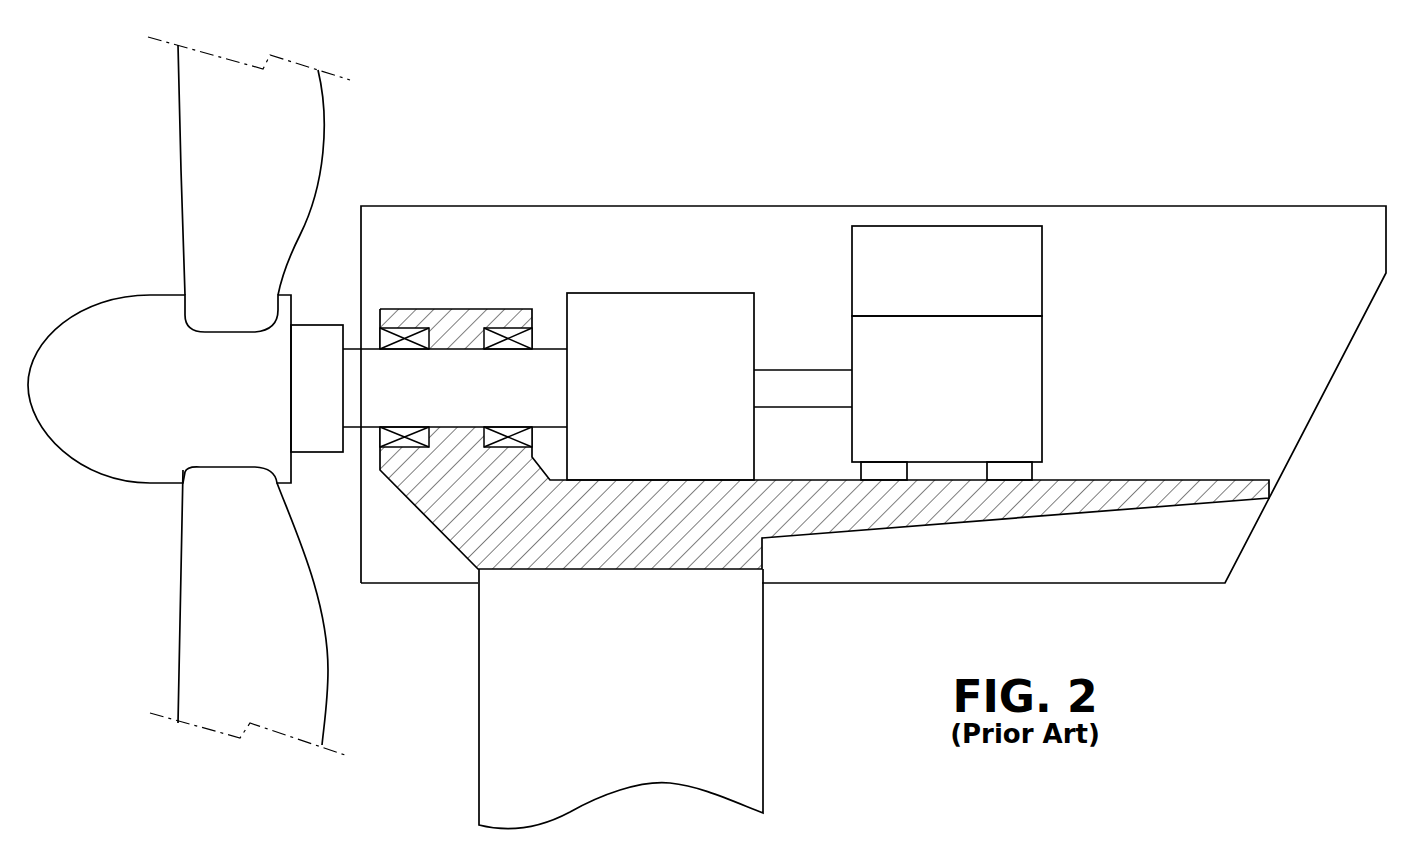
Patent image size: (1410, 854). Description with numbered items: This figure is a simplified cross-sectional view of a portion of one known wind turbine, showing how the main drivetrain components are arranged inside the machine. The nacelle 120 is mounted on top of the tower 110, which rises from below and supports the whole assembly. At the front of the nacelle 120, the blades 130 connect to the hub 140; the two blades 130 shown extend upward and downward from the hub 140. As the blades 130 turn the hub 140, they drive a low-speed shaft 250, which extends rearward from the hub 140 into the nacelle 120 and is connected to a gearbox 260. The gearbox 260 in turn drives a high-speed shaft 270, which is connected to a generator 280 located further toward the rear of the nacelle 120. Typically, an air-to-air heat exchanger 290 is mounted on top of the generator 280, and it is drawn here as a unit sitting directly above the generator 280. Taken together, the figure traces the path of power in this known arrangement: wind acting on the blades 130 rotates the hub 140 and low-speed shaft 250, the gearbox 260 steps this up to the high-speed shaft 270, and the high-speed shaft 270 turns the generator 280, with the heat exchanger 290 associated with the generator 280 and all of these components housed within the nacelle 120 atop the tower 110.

The tower 110 is at (600, 697).
The nacelle 120 is at (503, 206).
The blades 130 is at (215, 161).
The hub 140 is at (176, 399).
The low-speed shaft 250 is at (426, 399).
The gearbox 260 is at (638, 399).
The high-speed shaft 270 is at (816, 370).
The generator 280 is at (926, 399).
The air-to-air heat exchanger 290 is at (926, 282).